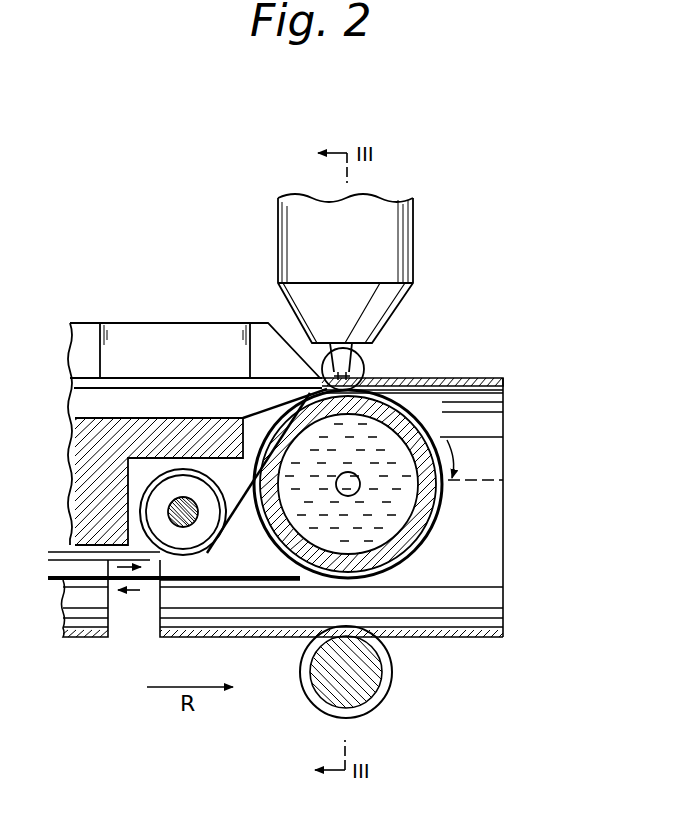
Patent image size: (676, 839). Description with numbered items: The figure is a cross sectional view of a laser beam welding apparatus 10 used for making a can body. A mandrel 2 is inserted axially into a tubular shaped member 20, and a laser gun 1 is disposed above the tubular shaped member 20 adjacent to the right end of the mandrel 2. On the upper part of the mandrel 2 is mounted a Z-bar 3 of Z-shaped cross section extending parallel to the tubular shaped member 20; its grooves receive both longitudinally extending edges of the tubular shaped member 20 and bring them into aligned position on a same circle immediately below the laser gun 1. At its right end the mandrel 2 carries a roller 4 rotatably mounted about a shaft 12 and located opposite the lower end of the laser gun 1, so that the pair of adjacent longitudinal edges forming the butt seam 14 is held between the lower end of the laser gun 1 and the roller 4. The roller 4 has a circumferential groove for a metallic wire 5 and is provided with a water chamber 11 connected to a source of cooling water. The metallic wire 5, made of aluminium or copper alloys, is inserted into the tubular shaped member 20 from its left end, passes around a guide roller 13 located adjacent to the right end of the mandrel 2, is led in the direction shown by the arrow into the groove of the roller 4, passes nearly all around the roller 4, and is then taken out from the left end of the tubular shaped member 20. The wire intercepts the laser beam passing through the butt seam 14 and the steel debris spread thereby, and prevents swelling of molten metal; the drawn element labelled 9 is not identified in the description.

The laser gun 1 is at (403, 240).
The mandrel 2 is at (95, 472).
The Z-bar 3 is at (152, 340).
The roller 4 is at (440, 436).
The metallic wire 5 is at (240, 507).
The ball valve 9 is at (365, 371).
The laser beam welding apparatus 10 is at (528, 182).
The water chamber 11 is at (410, 482).
The shaft 12 is at (356, 492).
The guide roller 13 is at (197, 535).
The butt seam 14 is at (350, 377).
The tubular shaped member 20 is at (478, 380).